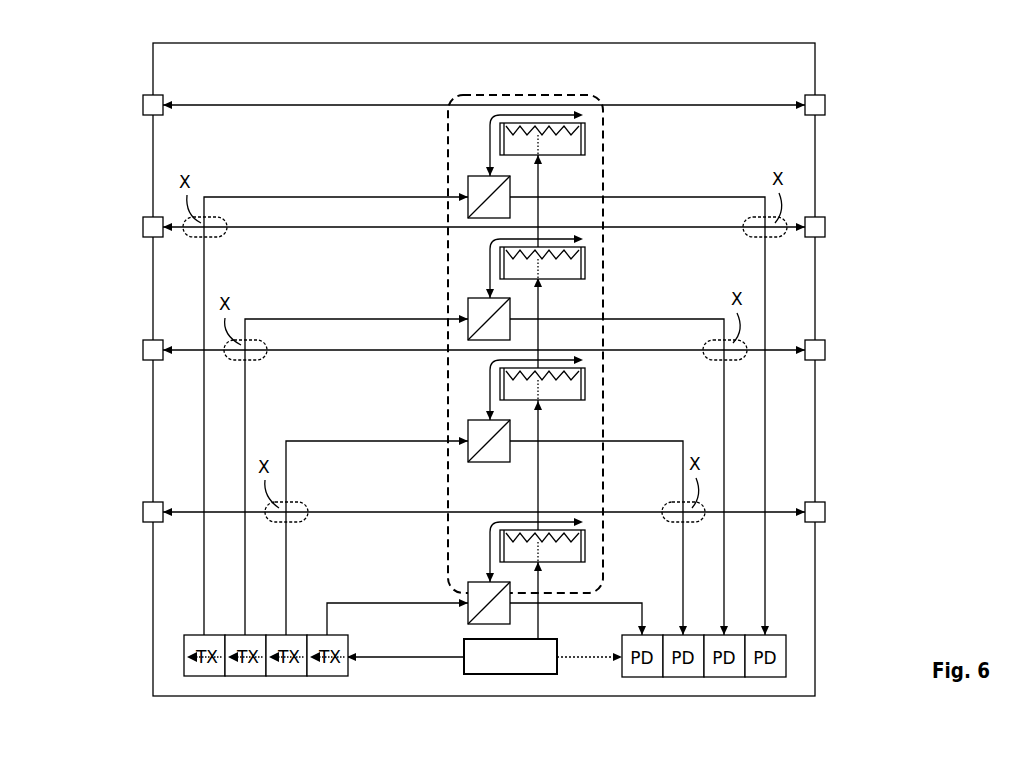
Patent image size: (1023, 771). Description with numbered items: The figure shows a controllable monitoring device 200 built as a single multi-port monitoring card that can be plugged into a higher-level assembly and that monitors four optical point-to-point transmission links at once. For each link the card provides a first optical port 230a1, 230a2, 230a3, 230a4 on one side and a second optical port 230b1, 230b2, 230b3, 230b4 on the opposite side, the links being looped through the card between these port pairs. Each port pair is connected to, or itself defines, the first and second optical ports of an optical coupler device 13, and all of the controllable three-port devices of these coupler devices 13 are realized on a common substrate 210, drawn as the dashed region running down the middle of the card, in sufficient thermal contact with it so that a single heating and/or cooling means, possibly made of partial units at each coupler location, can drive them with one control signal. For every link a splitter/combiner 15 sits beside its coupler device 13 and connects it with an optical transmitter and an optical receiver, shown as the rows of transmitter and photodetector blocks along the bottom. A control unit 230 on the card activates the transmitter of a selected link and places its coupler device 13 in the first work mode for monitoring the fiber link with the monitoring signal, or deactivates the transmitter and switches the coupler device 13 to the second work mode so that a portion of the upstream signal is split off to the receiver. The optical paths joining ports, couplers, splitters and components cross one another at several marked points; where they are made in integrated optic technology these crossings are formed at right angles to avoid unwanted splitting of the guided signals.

The monitoring device 200 is at (882, 60).
The common substrate 210 is at (608, 157).
The optical coupler device 13 is at (548, 96).
The splitter/combiner 15 is at (472, 188).
The control unit 230 is at (549, 652).
The first optical port 230a1 is at (141, 103).
The first optical port 230a2 is at (141, 225).
The first optical port 230a3 is at (141, 348).
The first optical port 230a4 is at (141, 510).
The second optical port 230b1 is at (827, 104).
The second optical port 230b2 is at (827, 226).
The second optical port 230b3 is at (827, 349).
The second optical port 230b4 is at (827, 511).